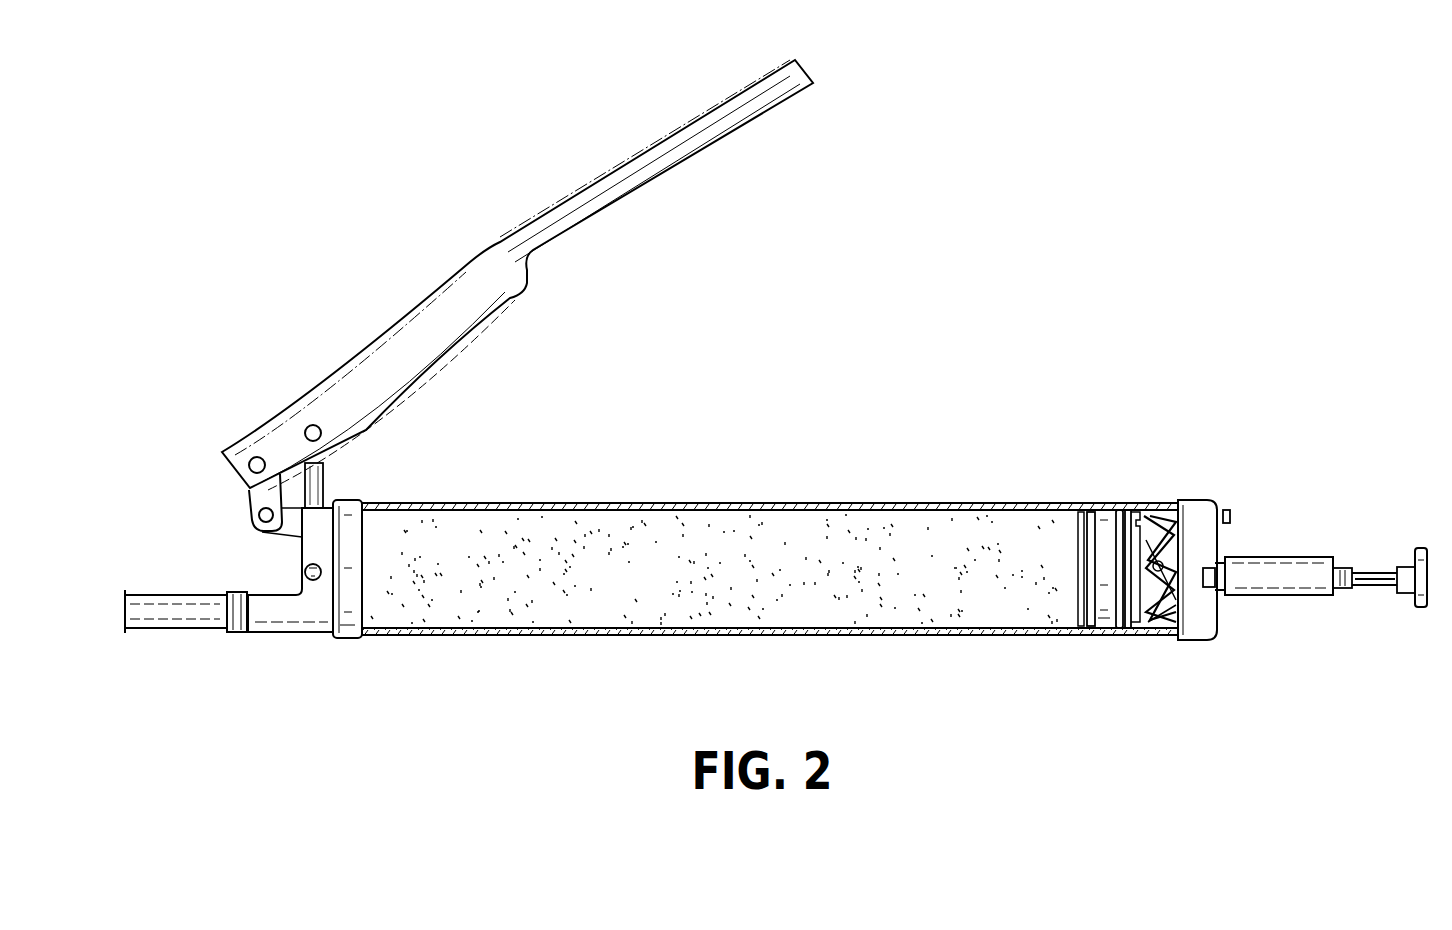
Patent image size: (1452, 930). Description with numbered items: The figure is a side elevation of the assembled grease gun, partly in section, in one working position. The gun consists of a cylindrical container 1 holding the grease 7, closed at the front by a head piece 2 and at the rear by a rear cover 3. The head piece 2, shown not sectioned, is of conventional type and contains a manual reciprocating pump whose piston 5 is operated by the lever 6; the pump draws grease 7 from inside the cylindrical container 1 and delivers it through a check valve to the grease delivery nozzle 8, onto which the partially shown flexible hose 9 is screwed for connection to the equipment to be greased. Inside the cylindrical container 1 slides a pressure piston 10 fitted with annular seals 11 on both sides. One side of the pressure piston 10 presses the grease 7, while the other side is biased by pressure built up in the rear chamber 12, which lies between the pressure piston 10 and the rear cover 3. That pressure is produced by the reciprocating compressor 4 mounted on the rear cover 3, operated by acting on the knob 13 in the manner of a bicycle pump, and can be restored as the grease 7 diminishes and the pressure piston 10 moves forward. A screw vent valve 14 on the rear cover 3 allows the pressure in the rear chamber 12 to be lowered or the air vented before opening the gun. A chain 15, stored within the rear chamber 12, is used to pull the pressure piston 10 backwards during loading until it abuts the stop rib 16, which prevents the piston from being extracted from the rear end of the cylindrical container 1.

The cylindrical container 1 is at (752, 503).
The head piece 2 is at (290, 640).
The rear cover 3 is at (1208, 501).
The reciprocating compressor 4 is at (1270, 580).
The piston 5 is at (321, 486).
The lever 6 is at (498, 262).
The grease 7 is at (742, 596).
The grease delivery nozzle 8 is at (245, 600).
The flexible hose 9 is at (158, 612).
The pressure piston 10 is at (1104, 613).
The annular seals 11 is at (1086, 509).
The rear chamber 12 is at (1200, 620).
The knob 13 is at (1422, 565).
The screw vent valve 14 is at (1232, 517).
The chain 15 is at (1166, 632).
The stop rib 16 is at (1138, 511).